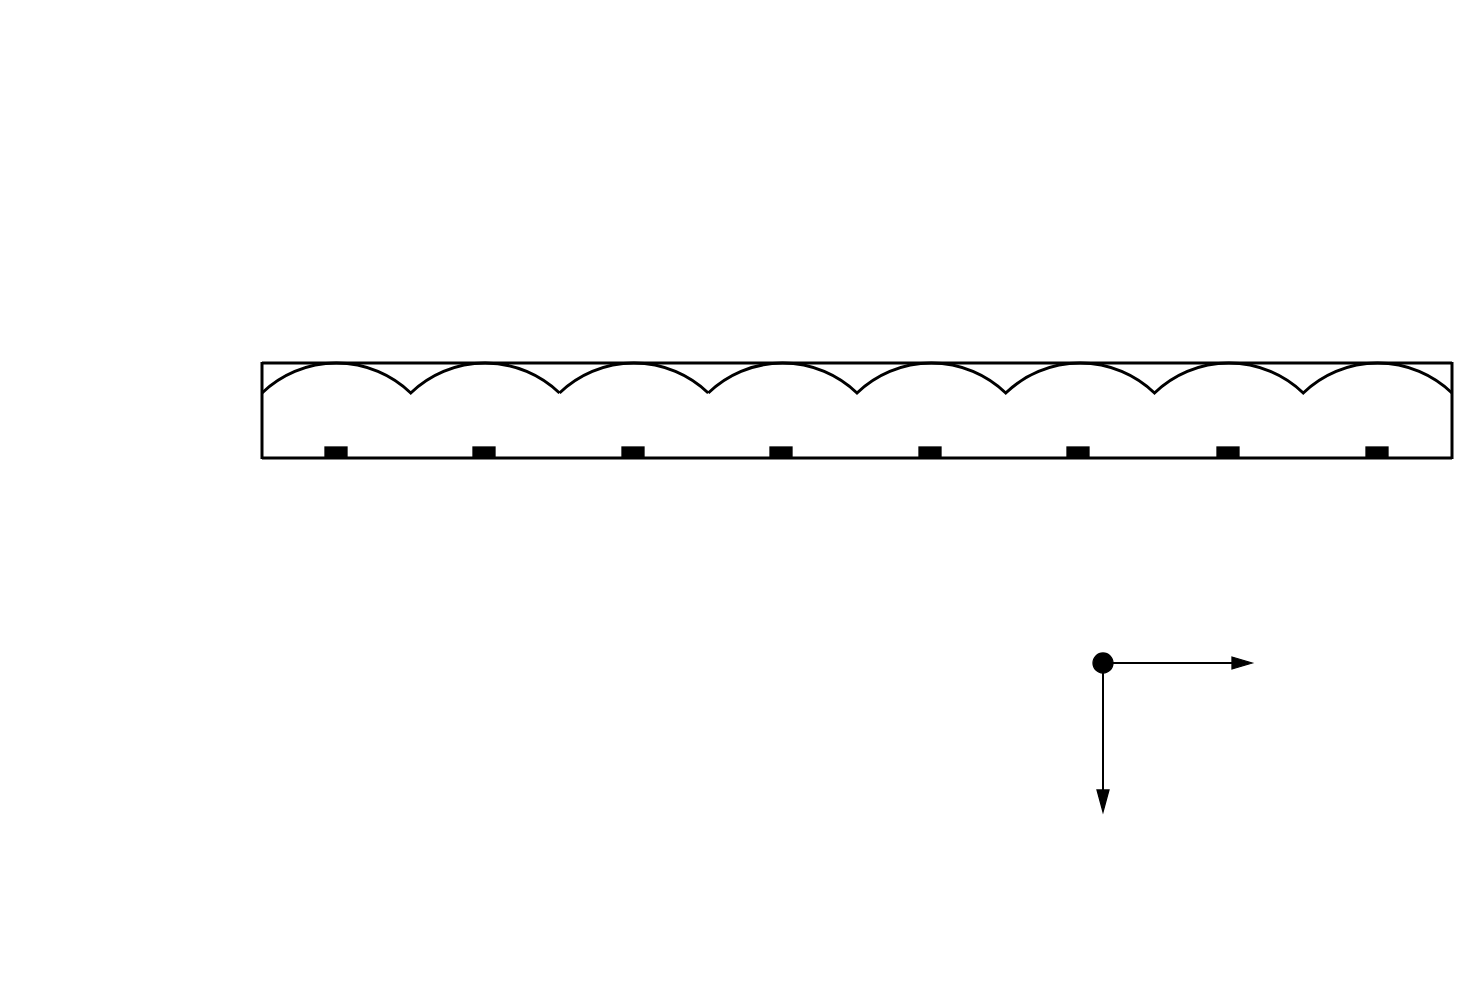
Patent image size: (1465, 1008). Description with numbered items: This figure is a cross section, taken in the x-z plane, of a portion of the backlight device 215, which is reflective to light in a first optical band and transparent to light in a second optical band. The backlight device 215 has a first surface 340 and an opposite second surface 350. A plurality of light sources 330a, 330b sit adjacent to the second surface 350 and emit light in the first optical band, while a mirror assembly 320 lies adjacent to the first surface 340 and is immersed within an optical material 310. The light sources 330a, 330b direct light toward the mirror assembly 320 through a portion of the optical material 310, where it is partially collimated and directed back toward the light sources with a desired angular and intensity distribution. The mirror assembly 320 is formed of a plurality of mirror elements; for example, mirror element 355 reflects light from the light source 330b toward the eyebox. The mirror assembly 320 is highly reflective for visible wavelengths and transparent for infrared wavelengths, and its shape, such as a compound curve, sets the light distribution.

The backlight device 215 is at (245, 50).
The optical material 310 is at (277, 417).
The mirror assembly 320 is at (572, 365).
The light source 330a is at (637, 459).
The light source 330b is at (785, 459).
The first surface 340 is at (1150, 363).
The second surface 350 is at (1157, 459).
The mirror element 355 is at (726, 365).